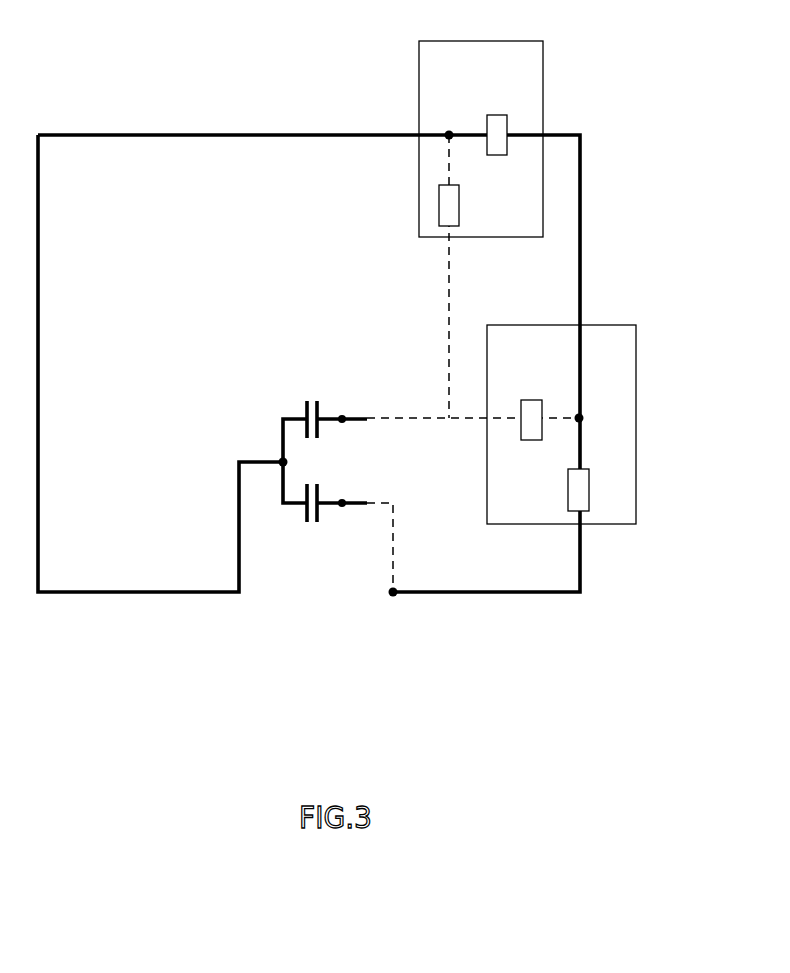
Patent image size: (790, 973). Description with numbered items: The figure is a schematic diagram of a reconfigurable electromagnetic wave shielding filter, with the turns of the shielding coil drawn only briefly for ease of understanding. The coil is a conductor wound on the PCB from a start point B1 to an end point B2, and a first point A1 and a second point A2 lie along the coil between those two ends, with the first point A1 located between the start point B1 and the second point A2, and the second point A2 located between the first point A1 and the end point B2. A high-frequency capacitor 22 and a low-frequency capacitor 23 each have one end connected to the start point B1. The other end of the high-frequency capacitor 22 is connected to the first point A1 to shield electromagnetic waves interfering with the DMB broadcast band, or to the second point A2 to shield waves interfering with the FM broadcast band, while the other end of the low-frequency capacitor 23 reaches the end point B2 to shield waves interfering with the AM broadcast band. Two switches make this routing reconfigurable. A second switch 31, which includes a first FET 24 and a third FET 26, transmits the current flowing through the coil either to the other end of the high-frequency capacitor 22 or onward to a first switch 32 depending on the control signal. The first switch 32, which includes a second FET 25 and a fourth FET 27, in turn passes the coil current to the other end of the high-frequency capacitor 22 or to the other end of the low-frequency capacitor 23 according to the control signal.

The high-frequency capacitor 22 is at (316, 401).
The low-frequency capacitor 23 is at (316, 522).
The first FET 24 is at (497, 115).
The second FET 25 is at (568, 490).
The third FET 26 is at (459, 205).
The fourth FET 27 is at (531, 400).
The second switch 31 is at (543, 41).
The first switch 32 is at (636, 325).
The first point A1 is at (449, 130).
The second point A2 is at (582, 416).
The start point B1 is at (280, 460).
The end point B2 is at (393, 597).